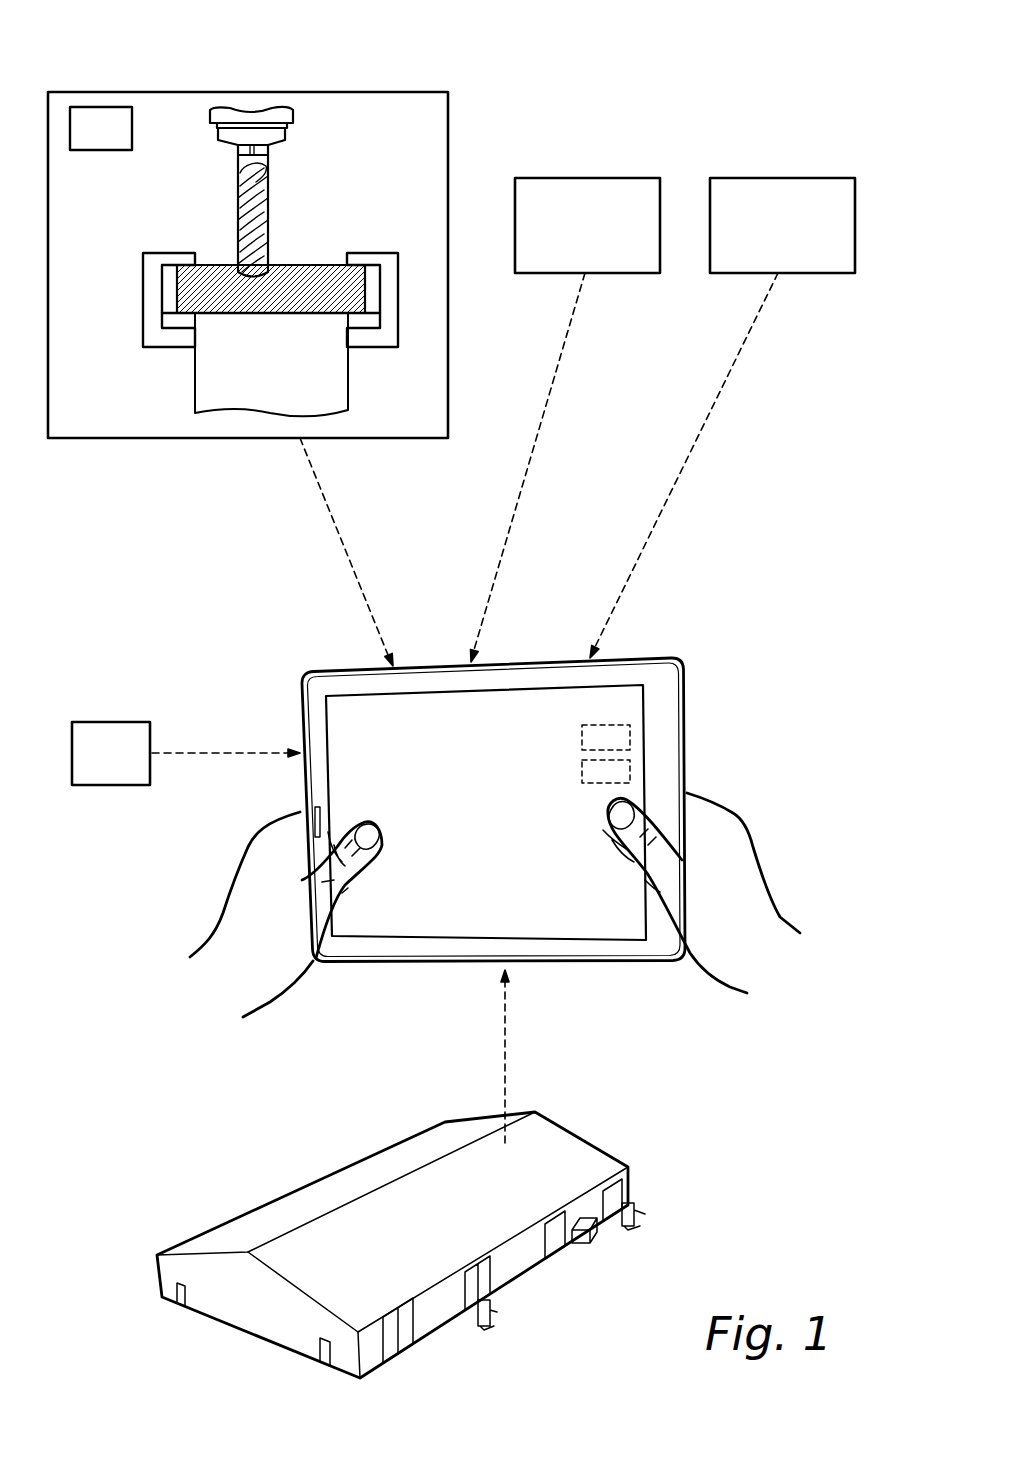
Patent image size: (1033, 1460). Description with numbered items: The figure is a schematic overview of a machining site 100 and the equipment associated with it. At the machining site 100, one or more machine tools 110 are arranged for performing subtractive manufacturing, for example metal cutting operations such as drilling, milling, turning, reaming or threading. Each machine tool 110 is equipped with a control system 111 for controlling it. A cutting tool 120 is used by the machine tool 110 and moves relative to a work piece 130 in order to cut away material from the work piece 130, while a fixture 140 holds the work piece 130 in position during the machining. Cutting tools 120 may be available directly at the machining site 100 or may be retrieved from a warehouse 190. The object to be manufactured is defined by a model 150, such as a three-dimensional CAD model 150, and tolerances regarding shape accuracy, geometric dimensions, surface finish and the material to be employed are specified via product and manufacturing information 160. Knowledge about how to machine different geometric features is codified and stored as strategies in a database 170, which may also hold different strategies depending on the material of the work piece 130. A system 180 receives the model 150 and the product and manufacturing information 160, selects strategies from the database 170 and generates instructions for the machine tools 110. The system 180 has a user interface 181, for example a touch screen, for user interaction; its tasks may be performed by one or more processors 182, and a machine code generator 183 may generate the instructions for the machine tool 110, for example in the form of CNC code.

The machining site 100 is at (746, 64).
The machine tool 110 is at (118, 438).
The control system 111 is at (98, 113).
The cutting tool 120 is at (267, 177).
The work piece 130 is at (315, 272).
The fixture 140 is at (387, 258).
The model 150 is at (582, 182).
The product and manufacturing information 160 is at (778, 182).
The database 170 is at (103, 722).
The system 180 is at (633, 658).
The user interface 181 is at (510, 687).
The processor 182 is at (622, 738).
The machine code generator 183 is at (623, 772).
The warehouse 190 is at (248, 1218).